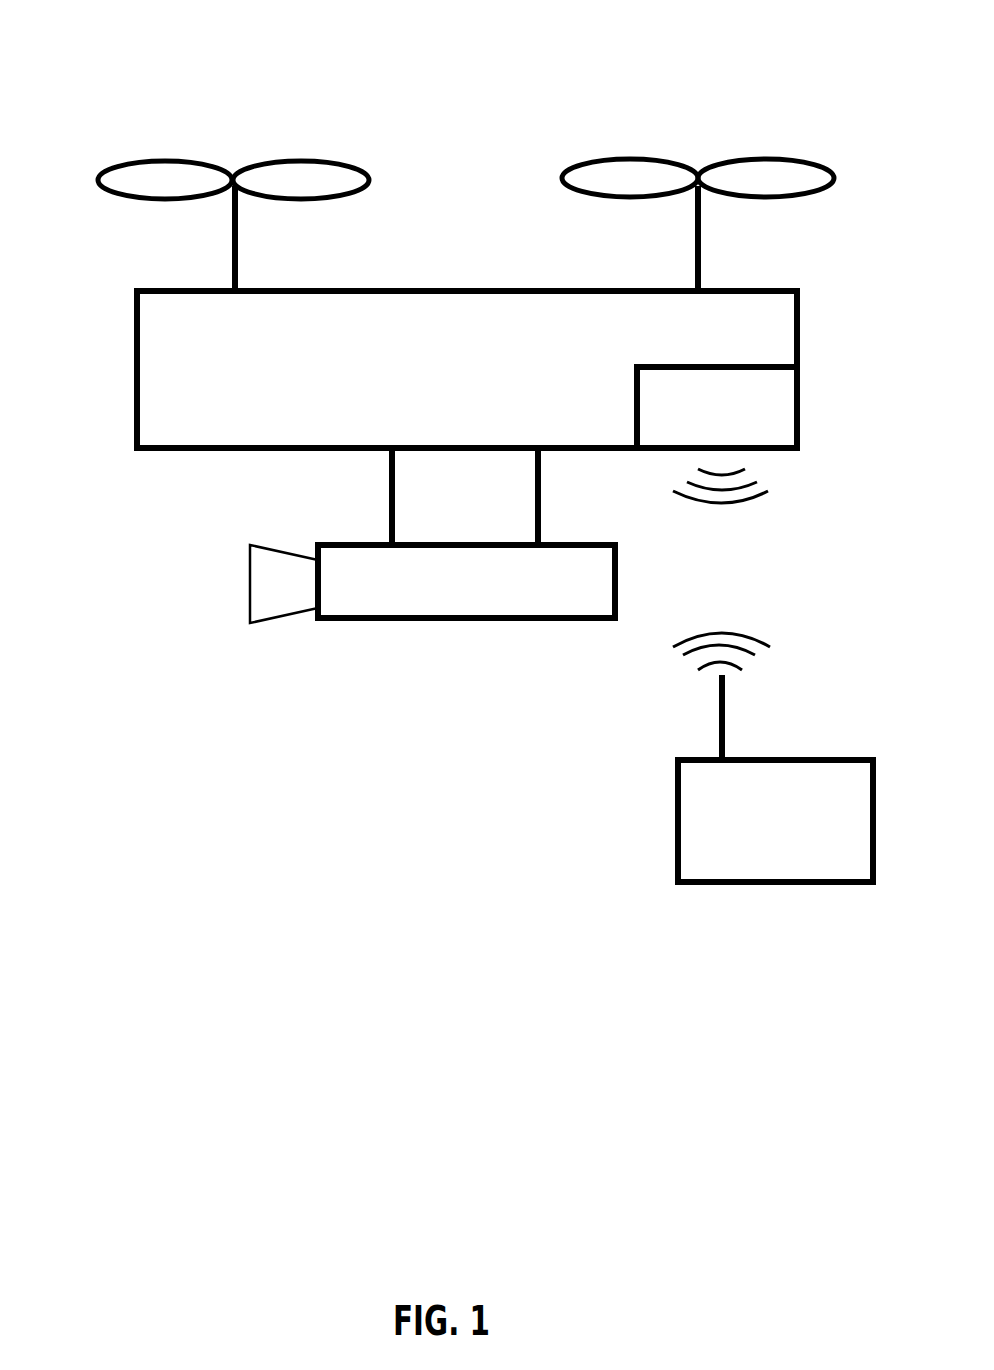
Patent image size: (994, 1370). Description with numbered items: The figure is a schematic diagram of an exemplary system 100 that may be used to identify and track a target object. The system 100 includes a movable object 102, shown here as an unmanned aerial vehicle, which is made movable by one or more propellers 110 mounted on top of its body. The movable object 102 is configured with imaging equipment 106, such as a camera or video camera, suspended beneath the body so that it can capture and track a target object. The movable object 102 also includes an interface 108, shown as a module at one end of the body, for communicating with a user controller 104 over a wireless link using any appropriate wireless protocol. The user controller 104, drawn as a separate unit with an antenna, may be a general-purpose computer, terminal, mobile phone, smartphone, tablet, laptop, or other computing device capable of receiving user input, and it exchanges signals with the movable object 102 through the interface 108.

The system 100 is at (906, 40).
The movable object 102 is at (409, 351).
The user controller 104 is at (728, 757).
The imaging equipment 106 is at (376, 535).
The interface 108 is at (781, 450).
The propellers 110 is at (454, 187).